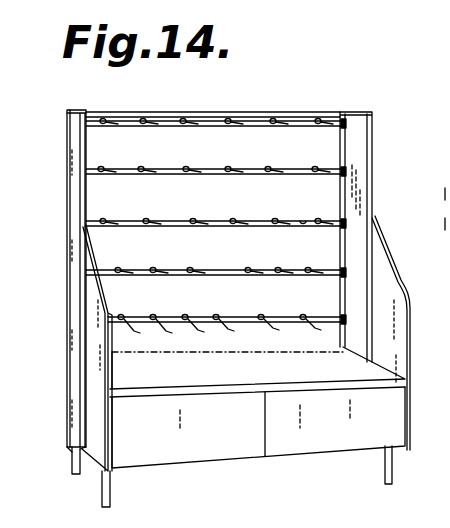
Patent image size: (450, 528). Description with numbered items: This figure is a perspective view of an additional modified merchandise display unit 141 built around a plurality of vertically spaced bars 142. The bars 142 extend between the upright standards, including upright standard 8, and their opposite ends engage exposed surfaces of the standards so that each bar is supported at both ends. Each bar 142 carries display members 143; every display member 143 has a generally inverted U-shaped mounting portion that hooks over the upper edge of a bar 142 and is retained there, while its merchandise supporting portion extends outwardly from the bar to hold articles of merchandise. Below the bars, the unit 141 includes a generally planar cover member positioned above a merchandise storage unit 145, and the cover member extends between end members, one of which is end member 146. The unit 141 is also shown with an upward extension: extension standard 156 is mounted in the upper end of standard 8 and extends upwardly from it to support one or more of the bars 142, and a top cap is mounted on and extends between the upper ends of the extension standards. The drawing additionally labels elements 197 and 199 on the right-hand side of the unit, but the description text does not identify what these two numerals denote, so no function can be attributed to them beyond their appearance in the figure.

The additional modified merchandise display unit 141 is at (67, 223).
The bar 142 is at (248, 165).
The upright standard 8 is at (340, 208).
The extension standard 156 is at (344, 138).
The right side panel 197 is at (385, 270).
The seat top 199 is at (372, 367).
The display member 143 is at (192, 327).
The end member 146 is at (82, 407).
The merchandise storage unit 145 is at (317, 444).